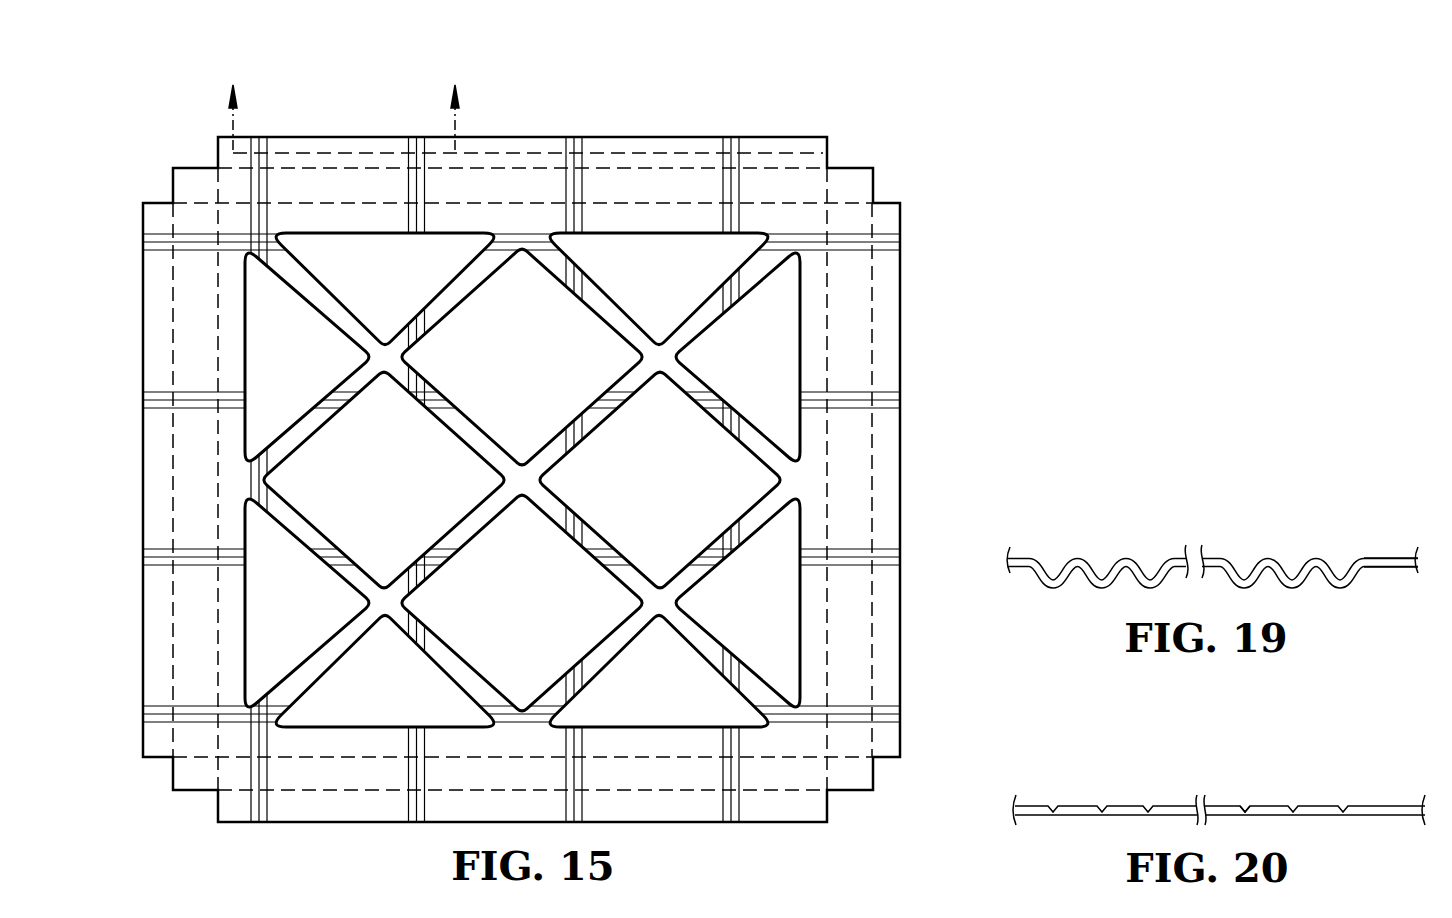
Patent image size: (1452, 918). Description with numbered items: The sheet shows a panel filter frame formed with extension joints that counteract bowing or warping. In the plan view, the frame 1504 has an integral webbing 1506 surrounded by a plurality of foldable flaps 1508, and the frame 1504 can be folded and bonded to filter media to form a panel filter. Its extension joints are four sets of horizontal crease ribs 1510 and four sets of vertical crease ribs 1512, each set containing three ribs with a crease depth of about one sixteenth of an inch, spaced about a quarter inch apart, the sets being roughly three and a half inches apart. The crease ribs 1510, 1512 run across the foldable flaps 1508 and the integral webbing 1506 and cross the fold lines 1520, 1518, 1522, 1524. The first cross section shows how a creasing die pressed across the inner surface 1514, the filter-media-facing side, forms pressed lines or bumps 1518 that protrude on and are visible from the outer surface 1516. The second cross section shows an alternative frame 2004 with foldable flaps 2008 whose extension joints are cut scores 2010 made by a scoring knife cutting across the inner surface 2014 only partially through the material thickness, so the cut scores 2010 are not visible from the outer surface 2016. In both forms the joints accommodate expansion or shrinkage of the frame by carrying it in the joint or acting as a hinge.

In FIG. 15, the frame 1504 is at (616, 437).
In FIG. 15, the integral webbing 1506 is at (697, 337).
In FIG. 15, the foldable flaps 1508 is at (885, 510).
In FIG. 19, the foldable flaps 1508 is at (1207, 544).
In FIG. 15, the horizontal crease ribs 1510 is at (854, 392).
In FIG. 19, the horizontal crease ribs 1510 is at (1247, 562).
In FIG. 15, the vertical crease ribs 1512 is at (408, 187).
In FIG. 19, the inner surface 1514 is at (1400, 556).
In FIG. 19, the outer surface 1516 is at (1382, 569).
In FIG. 15, the pressed lines/bumps 1518 is at (872, 263).
In FIG. 19, the pressed lines/bumps 1518 is at (1052, 588).
In FIG. 15, the fold line 1520 is at (827, 293).
In FIG. 15, the fold line 1522 is at (682, 168).
In FIG. 15, the fold line 1524 is at (619, 202).
In FIG. 20, the frame 2004 is at (1199, 784).
In FIG. 20, the foldable flaps 2008 is at (1219, 785).
In FIG. 20, the cut scores 2010 is at (1245, 806).
In FIG. 20, the inner surface 2014 is at (1400, 805).
In FIG. 20, the outer surface 2016 is at (1385, 816).